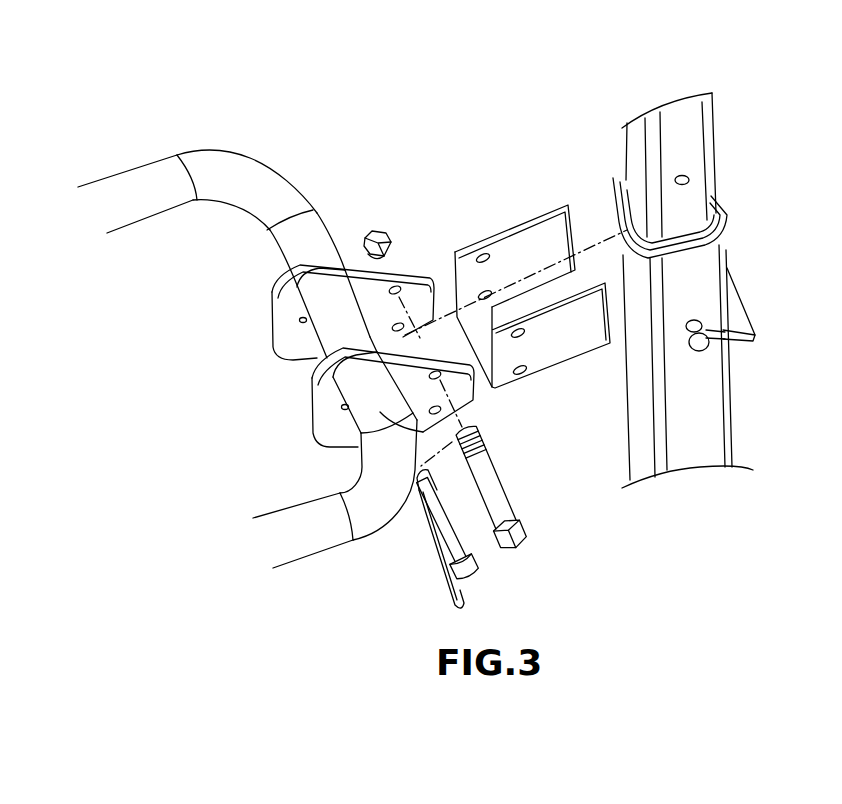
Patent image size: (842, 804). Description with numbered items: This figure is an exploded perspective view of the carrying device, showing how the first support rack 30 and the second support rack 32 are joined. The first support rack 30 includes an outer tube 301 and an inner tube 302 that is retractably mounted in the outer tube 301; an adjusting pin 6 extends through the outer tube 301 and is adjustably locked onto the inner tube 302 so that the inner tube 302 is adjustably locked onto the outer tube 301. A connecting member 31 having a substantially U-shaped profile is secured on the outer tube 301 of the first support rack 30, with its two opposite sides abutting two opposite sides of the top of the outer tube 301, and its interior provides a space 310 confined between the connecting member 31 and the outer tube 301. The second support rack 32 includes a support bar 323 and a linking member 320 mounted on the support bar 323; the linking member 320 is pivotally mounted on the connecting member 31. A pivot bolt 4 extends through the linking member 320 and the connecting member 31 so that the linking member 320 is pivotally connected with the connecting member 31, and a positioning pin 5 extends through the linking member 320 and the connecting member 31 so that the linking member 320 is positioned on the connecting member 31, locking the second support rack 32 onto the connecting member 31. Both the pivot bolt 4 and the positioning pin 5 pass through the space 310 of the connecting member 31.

The first support rack 30 is at (733, 97).
The outer tube 301 is at (710, 422).
The inner tube 302 is at (695, 162).
The connecting member 31 is at (548, 227).
The space 310 is at (523, 270).
The second support rack 32 is at (165, 143).
The linking member 320 is at (330, 432).
The support bar 323 is at (275, 180).
The pivot bolt 4 is at (493, 495).
The positioning pin 5 is at (473, 582).
The adjusting pin 6 is at (710, 348).